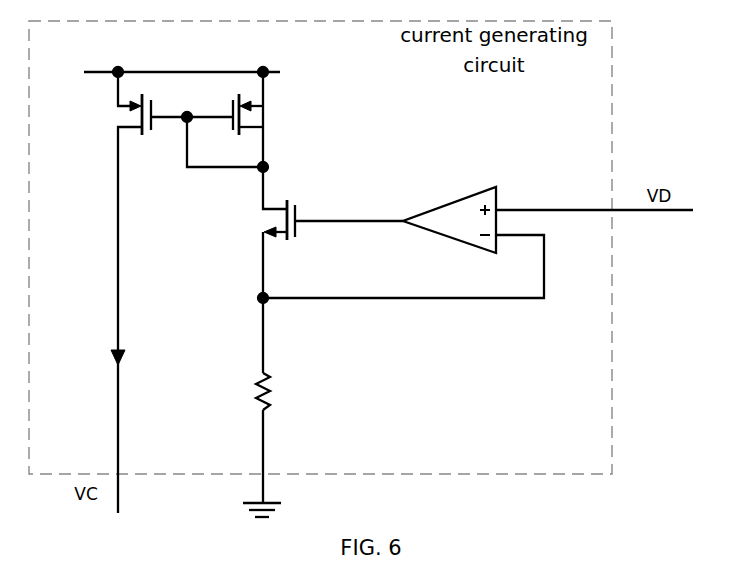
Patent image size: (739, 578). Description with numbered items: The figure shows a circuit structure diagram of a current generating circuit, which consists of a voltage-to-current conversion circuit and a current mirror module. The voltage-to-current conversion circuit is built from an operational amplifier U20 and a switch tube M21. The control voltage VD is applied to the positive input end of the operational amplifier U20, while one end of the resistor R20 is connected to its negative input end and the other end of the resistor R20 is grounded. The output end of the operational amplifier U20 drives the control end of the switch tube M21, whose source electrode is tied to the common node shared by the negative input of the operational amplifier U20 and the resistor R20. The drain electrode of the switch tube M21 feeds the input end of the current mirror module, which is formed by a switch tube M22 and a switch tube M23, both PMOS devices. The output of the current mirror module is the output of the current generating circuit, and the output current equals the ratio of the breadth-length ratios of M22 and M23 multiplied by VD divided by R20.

The switch tube M23 is at (126, 292).
The switch tube M22 is at (254, 119).
The switch tube M21 is at (307, 232).
The operational amplifier U20 is at (478, 234).
The resistor R20 is at (278, 407).